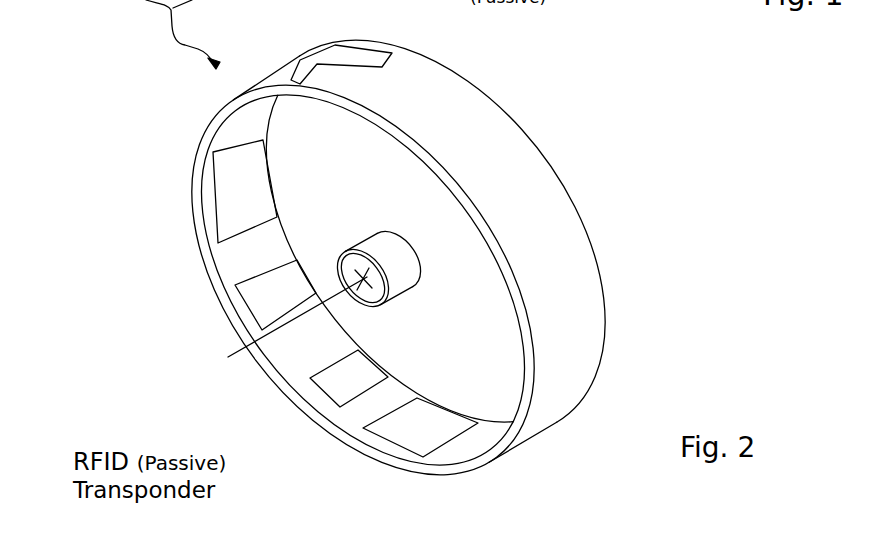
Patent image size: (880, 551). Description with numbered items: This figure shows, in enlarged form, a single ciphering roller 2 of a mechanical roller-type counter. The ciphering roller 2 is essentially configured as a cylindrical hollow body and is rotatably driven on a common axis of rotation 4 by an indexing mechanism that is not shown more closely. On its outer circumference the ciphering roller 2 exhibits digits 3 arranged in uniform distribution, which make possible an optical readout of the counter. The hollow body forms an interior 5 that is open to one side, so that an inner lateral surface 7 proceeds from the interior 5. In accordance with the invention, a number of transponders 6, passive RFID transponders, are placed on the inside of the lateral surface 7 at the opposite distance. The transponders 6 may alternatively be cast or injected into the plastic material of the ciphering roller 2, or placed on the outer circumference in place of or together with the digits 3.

The ciphering roller 2 is at (579, 189).
The digits 3 is at (583, 290).
The axis of rotation 4 is at (311, 273).
The interior 5 is at (493, 380).
The transponders 6 is at (412, 427).
The inner lateral surface 7 is at (463, 445).